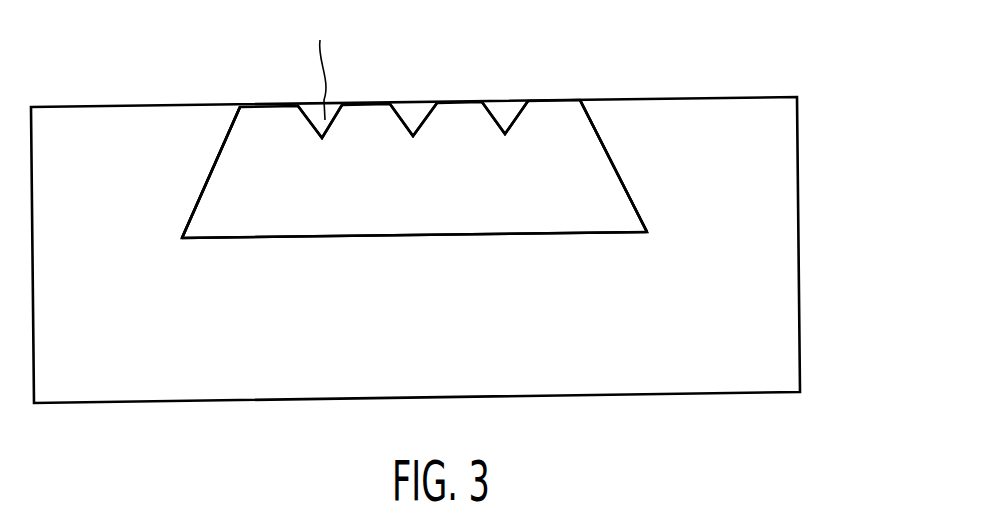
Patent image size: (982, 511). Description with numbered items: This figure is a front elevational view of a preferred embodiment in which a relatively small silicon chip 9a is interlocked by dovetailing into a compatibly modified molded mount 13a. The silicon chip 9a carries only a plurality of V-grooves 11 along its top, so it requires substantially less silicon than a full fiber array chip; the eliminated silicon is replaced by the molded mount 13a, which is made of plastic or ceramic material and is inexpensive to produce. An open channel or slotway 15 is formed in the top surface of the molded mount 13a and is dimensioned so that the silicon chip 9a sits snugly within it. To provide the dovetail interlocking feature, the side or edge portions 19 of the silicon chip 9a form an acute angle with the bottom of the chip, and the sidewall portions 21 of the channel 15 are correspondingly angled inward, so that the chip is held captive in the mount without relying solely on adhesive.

The silicon chip 9a is at (558, 115).
The V-groove 11 is at (340, 104).
The molded mount 13a is at (778, 220).
The channel or slotway 15 is at (568, 237).
The side or edge portions 19 is at (227, 142).
The sidewall portions 21 is at (208, 177).